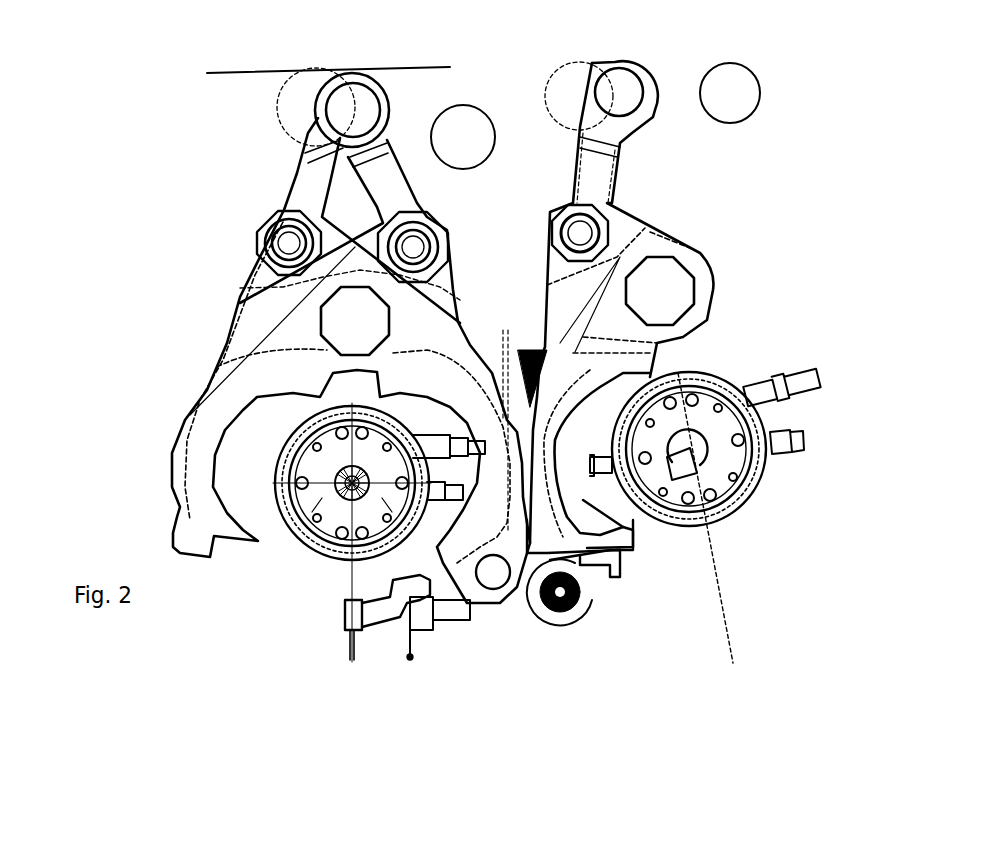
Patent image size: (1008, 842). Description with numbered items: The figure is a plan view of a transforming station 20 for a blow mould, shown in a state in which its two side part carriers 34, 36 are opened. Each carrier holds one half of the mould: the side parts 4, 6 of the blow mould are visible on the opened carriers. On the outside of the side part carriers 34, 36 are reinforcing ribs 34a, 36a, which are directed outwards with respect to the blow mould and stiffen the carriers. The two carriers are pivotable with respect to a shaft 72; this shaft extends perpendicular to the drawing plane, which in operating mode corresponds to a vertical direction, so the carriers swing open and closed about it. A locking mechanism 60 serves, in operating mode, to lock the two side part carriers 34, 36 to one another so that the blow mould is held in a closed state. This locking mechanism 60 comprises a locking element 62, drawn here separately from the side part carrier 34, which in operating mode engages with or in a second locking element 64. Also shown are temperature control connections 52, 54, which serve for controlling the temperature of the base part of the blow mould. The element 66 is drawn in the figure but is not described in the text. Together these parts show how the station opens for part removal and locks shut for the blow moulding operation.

The transforming station 20 is at (178, 318).
The shaft 72 is at (330, 318).
The side part carrier 36 is at (433, 320).
The reinforcing rib 36a is at (452, 383).
The side part carrier 34 is at (212, 444).
The reinforcing rib 34a is at (177, 458).
The temperature control connection 54 is at (803, 387).
The temperature control connection 52 is at (790, 457).
The side part 4 is at (300, 543).
The side part 6 is at (470, 610).
The locking element 62 is at (440, 627).
The second locking element 64 is at (373, 613).
The locking mechanism 60 is at (390, 647).
The bracket 66 is at (613, 582).